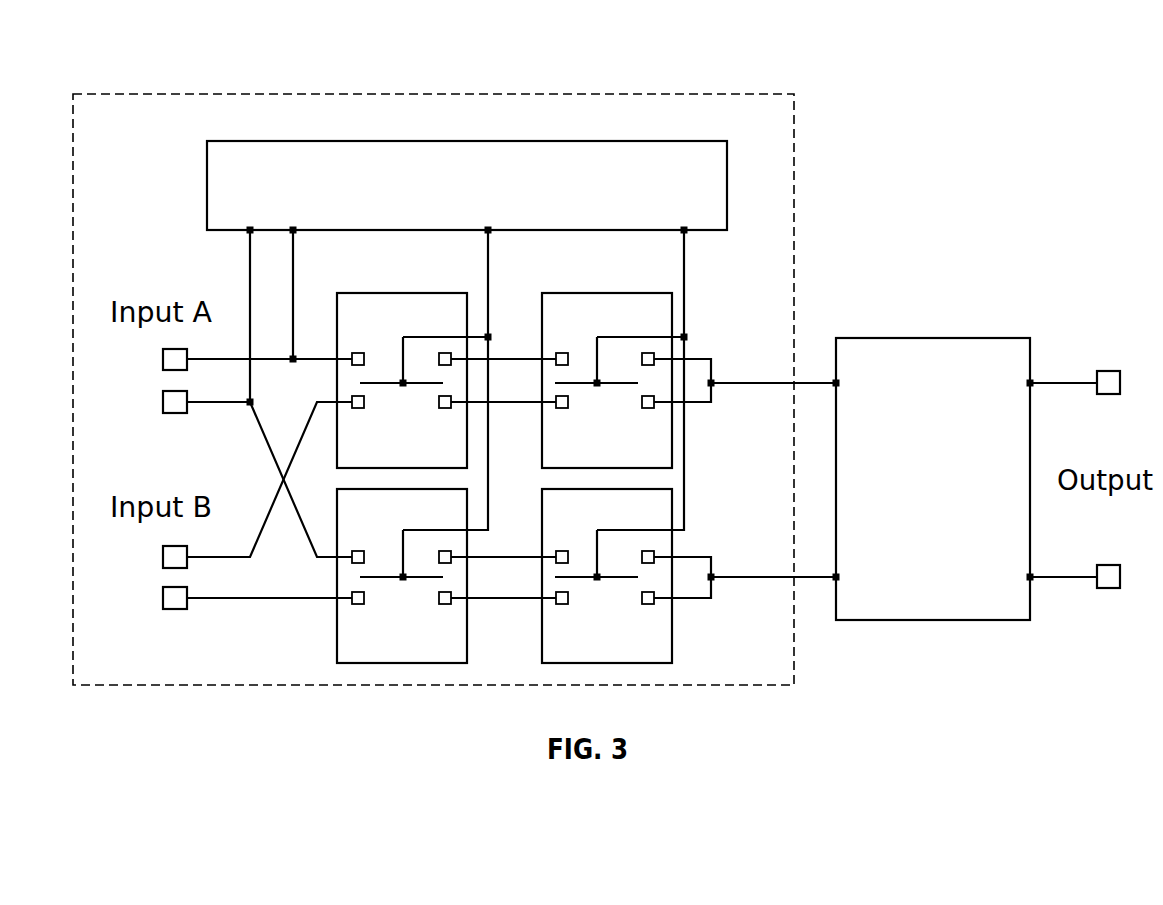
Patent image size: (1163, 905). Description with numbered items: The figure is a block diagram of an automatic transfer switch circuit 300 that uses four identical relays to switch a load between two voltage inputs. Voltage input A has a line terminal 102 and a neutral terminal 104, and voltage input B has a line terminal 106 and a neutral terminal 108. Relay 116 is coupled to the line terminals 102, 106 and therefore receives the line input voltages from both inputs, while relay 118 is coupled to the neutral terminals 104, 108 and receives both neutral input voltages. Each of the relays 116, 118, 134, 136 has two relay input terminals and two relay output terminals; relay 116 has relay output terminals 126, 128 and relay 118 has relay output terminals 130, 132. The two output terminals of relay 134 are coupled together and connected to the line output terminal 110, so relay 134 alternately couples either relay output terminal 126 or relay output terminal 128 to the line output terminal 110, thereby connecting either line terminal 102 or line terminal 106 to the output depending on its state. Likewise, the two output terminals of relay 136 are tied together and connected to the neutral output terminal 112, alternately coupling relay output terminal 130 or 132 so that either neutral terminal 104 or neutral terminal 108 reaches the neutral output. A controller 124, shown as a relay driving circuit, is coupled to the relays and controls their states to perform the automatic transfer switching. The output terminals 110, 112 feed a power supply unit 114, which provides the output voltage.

The automatic transfer switch circuit 300 is at (150, 54).
The controller 124 is at (273, 140).
The line terminal 102 is at (163, 359).
The neutral terminal 104 is at (163, 402).
The line terminal 106 is at (163, 557).
The neutral terminal 108 is at (163, 598).
The relay 116 is at (423, 447).
The relay 118 is at (423, 642).
The relay 134 is at (627, 447).
The relay 136 is at (627, 642).
The relay output terminal 126 is at (445, 352).
The relay output terminal 128 is at (445, 409).
The relay output terminal 130 is at (445, 564).
The relay output terminal 132 is at (445, 605).
The line output terminal 110 is at (740, 383).
The neutral output terminal 112 is at (740, 577).
The power supply unit 114 is at (900, 338).